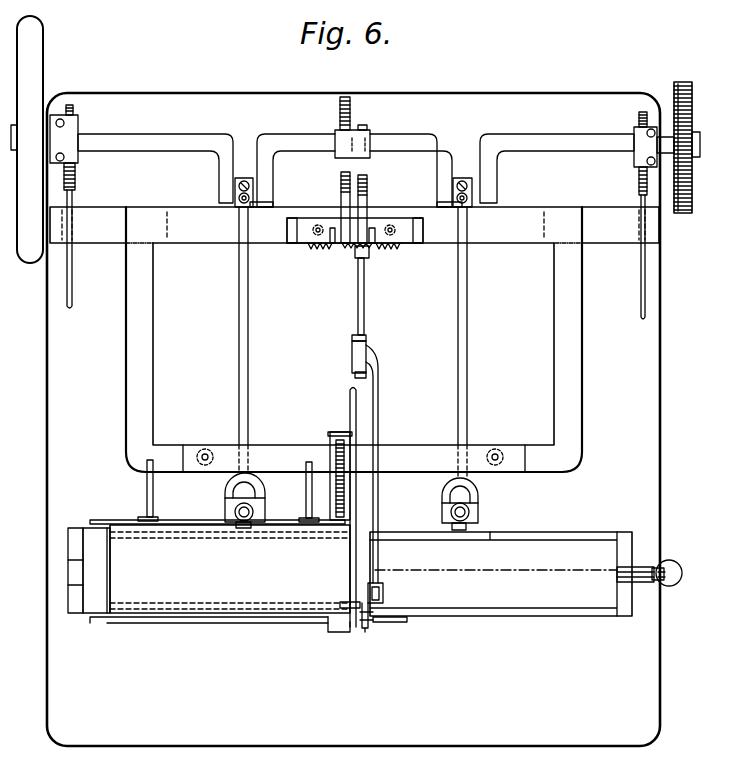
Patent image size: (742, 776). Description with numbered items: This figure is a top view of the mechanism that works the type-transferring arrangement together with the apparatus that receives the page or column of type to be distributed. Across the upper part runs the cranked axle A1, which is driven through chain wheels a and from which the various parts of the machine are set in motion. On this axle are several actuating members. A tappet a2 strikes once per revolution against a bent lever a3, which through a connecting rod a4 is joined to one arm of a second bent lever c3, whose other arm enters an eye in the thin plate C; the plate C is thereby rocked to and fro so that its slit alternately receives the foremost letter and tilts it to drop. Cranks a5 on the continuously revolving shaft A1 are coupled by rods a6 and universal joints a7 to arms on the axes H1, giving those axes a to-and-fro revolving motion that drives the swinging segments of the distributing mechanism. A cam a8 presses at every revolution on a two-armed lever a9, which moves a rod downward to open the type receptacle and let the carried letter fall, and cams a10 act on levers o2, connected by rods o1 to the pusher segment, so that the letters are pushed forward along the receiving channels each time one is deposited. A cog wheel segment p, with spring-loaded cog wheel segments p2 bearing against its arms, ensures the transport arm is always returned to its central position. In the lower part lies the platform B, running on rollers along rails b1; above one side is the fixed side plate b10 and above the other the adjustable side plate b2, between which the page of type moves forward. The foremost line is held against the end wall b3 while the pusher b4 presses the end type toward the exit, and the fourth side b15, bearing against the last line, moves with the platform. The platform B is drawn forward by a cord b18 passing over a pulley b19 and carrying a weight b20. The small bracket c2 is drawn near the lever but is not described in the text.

The cranked axle A1 is at (155, 142).
The chain wheel a is at (686, 112).
The tappet a2 is at (366, 129).
The bent lever a3 is at (368, 196).
The connecting rod a4 is at (363, 300).
The crank a5 is at (260, 200).
The rod a6 is at (248, 378).
The universal joint a7 is at (234, 210).
The cam a8 is at (345, 97).
The two armed lever a9 is at (341, 189).
The cam a10 is at (70, 130).
The lever o2 is at (74, 184).
The rod o1 is at (70, 290).
The cog wheel segment p is at (350, 256).
The cog wheel segment p2 is at (316, 252).
The axis H1 is at (232, 500).
The platform B is at (209, 569).
The rail b1 is at (498, 538).
The side plate b2 is at (189, 527).
The end wall b3 is at (352, 578).
The pusher b4 is at (349, 549).
The fixed side plate b10 is at (201, 629).
The fourth side b15 is at (106, 555).
The cord b18 is at (542, 576).
The pulley b19 is at (679, 562).
The weight b20 is at (670, 589).
The plate C is at (368, 636).
The bracket c2 is at (338, 633).
The second bent lever c3 is at (382, 605).